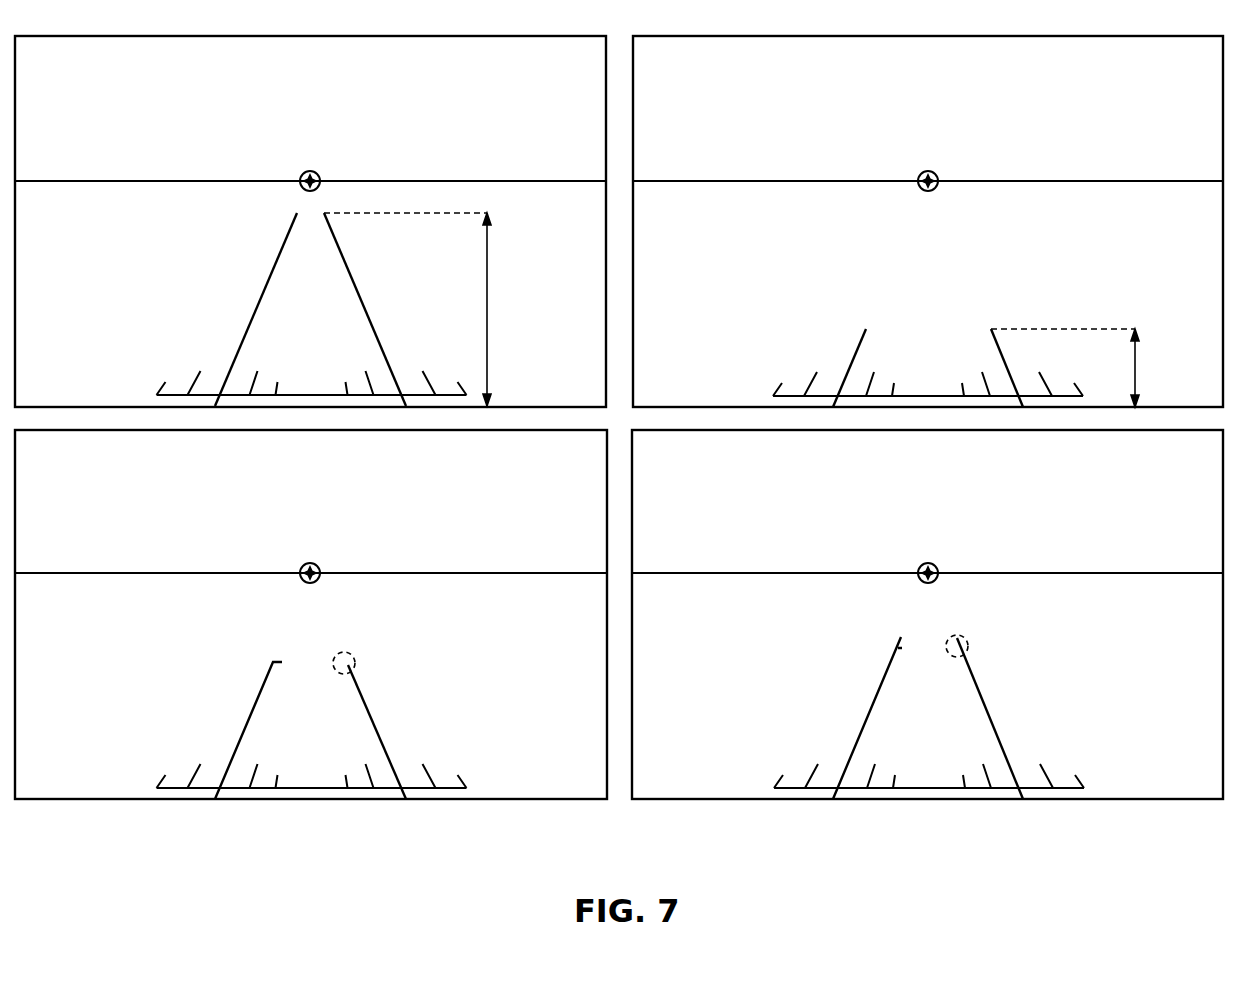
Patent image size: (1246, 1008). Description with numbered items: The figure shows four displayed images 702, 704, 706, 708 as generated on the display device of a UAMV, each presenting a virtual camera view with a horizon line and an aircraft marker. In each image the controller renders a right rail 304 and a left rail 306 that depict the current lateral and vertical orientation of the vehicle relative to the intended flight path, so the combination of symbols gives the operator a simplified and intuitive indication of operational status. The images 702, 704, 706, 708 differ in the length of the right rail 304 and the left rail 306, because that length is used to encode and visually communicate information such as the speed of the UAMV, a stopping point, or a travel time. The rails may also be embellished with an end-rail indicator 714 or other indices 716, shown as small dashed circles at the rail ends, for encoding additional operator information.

The displayed image 702 is at (90, 36).
The displayed image 704 is at (708, 36).
The displayed image 706 is at (89, 799).
The displayed image 708 is at (706, 799).
The right rail 304 is at (370, 317).
The left rail 306 is at (253, 317).
The end-rail indicator 714 is at (355, 653).
The index 716 is at (972, 652).